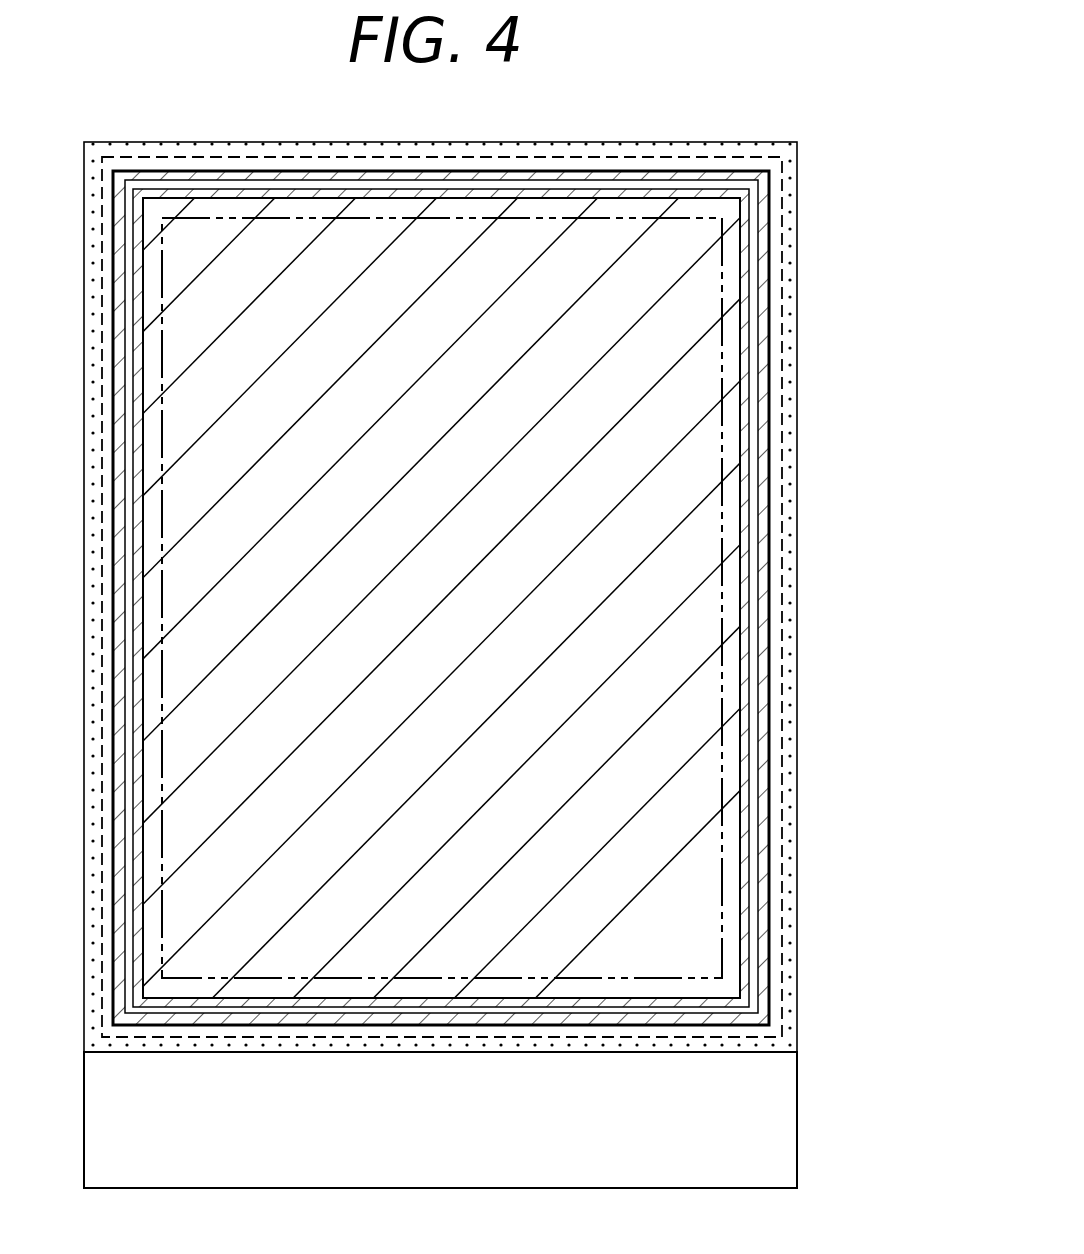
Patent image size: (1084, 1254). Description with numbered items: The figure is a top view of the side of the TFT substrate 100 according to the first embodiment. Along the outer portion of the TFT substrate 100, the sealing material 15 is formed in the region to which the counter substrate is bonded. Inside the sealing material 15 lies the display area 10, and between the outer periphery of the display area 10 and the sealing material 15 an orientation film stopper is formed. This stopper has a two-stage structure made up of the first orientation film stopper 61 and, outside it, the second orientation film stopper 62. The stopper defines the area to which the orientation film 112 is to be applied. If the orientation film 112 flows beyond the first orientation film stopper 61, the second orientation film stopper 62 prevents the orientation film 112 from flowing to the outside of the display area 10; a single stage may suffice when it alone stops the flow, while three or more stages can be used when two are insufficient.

The display area 10 is at (727, 252).
The first orientation film stopper 61 is at (745, 323).
The second orientation film stopper 62 is at (763, 386).
The sealing material 15 is at (792, 453).
The orientation film 112 is at (733, 533).
The TFT substrate 100 is at (798, 1125).